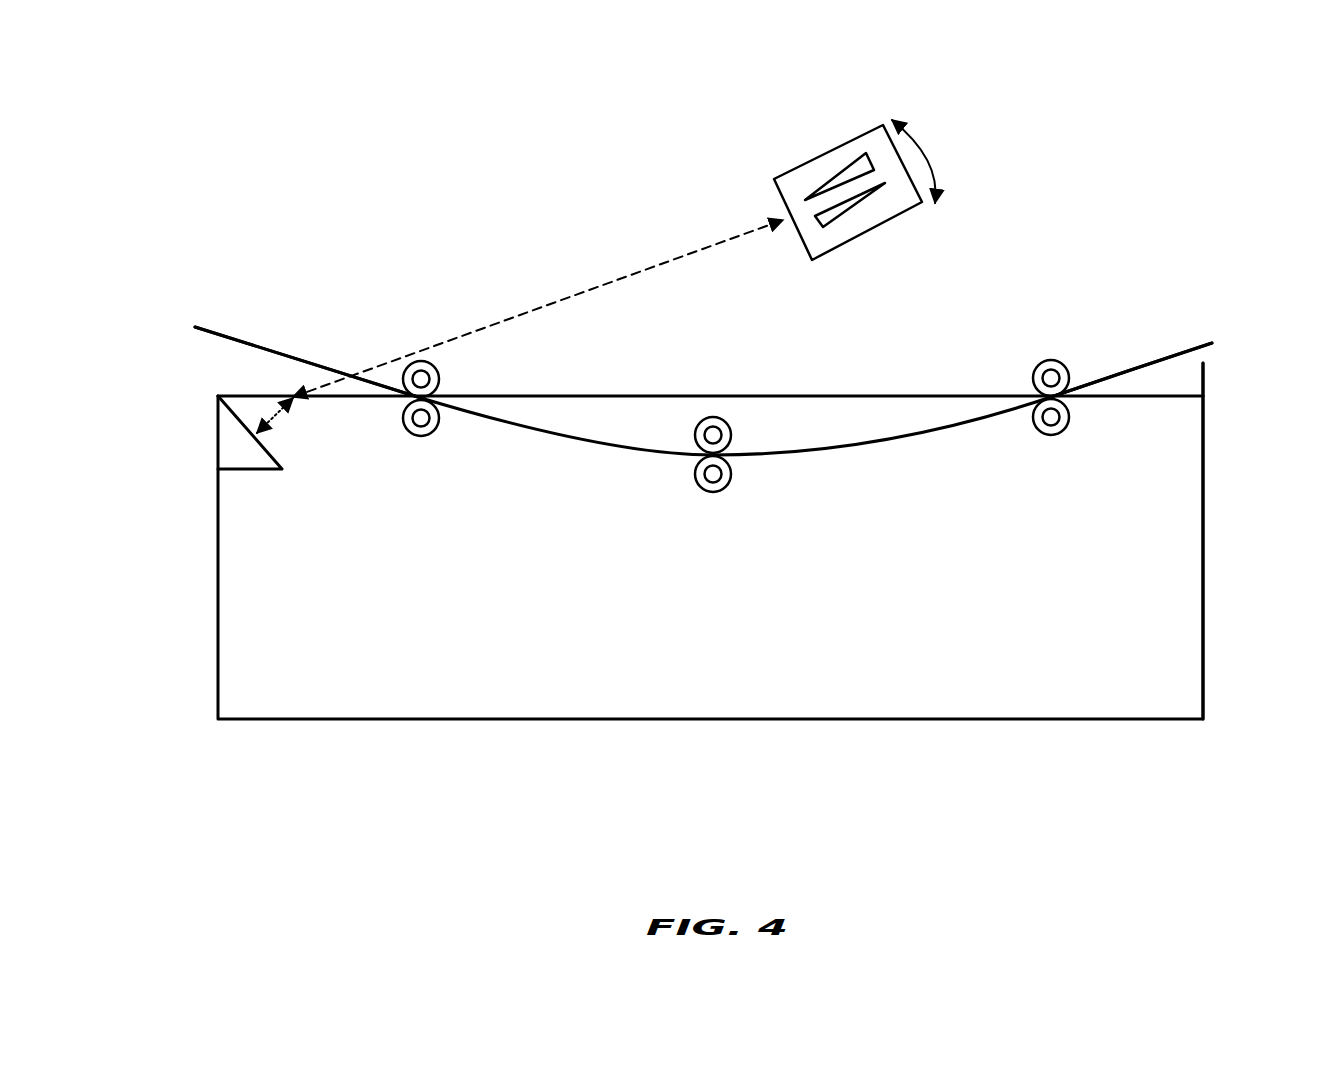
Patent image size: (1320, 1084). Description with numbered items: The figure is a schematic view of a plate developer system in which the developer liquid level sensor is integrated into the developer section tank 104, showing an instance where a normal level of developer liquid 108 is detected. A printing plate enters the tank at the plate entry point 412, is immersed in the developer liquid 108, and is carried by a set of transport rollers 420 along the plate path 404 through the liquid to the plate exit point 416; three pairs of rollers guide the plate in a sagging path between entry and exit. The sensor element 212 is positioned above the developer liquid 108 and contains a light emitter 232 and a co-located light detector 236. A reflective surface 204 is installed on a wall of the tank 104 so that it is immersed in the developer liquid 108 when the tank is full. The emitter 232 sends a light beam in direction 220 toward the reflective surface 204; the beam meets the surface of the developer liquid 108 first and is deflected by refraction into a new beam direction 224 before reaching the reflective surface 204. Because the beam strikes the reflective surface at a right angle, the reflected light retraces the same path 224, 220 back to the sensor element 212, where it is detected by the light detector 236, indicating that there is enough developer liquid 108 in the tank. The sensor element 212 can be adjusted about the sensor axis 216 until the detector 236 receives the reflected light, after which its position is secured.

The developer section tank 104 is at (357, 720).
The developer liquid 108 is at (1187, 592).
The reflective surface 204 is at (255, 441).
The sensor element 212 is at (873, 230).
The sensor axis 216 is at (932, 142).
The light beam direction 220 is at (578, 292).
The new beam direction 224 is at (277, 417).
The light emitter 232 is at (842, 170).
The light detector 236 is at (813, 230).
The plate path 404 is at (1123, 375).
The plate entry point 412 is at (195, 327).
The plate exit point 416 is at (1212, 343).
The transport rollers 420 is at (1051, 360).